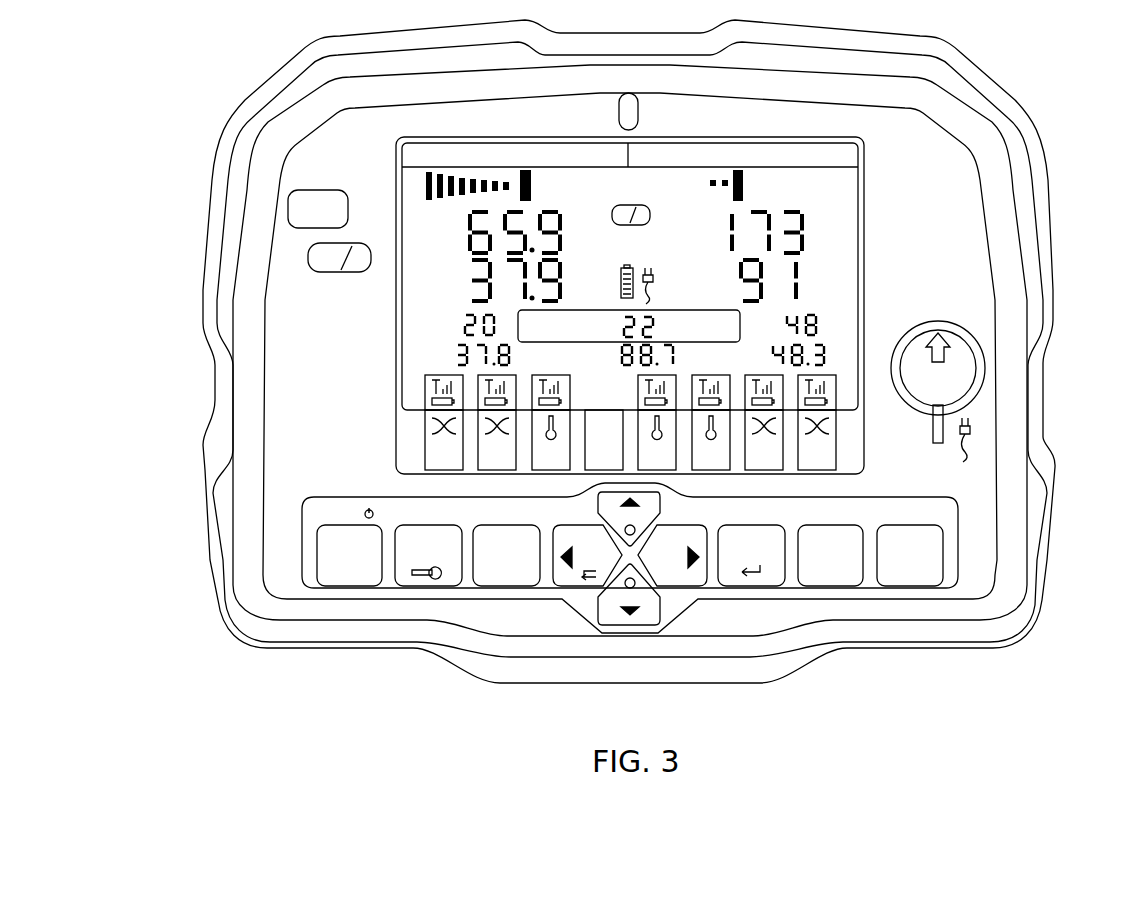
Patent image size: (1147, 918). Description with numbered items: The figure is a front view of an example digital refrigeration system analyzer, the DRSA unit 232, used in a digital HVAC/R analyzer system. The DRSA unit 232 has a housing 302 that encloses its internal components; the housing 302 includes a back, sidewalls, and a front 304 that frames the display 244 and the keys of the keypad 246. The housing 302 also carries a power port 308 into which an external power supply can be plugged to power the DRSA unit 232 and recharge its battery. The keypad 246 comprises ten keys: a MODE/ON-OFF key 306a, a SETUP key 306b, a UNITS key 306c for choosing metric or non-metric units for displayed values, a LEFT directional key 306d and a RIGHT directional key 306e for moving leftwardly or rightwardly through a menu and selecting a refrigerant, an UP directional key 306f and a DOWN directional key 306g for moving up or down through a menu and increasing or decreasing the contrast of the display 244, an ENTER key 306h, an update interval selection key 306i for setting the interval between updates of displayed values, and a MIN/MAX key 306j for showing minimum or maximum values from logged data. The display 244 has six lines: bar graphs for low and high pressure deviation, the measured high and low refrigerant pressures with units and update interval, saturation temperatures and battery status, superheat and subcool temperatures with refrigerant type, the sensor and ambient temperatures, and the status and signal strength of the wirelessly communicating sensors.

The DRSA unit 232 is at (160, 50).
The housing 302 is at (208, 236).
The front 304 is at (338, 150).
The display 244 is at (835, 197).
The power port 308 is at (957, 363).
The keypad 246 is at (968, 556).
The MODE/ON-OFF key 306a is at (335, 575).
The SETUP key 306b is at (403, 568).
The UNITS key 306c is at (487, 568).
The LEFT directional key 306d is at (567, 570).
The RIGHT directional key 306e is at (703, 568).
The UP directional key 306f is at (617, 526).
The DOWN directional key 306g is at (650, 598).
The ENTER key 306h is at (773, 568).
The update interval selection key 306i is at (852, 570).
The MIN/MAX key 306j is at (937, 568).